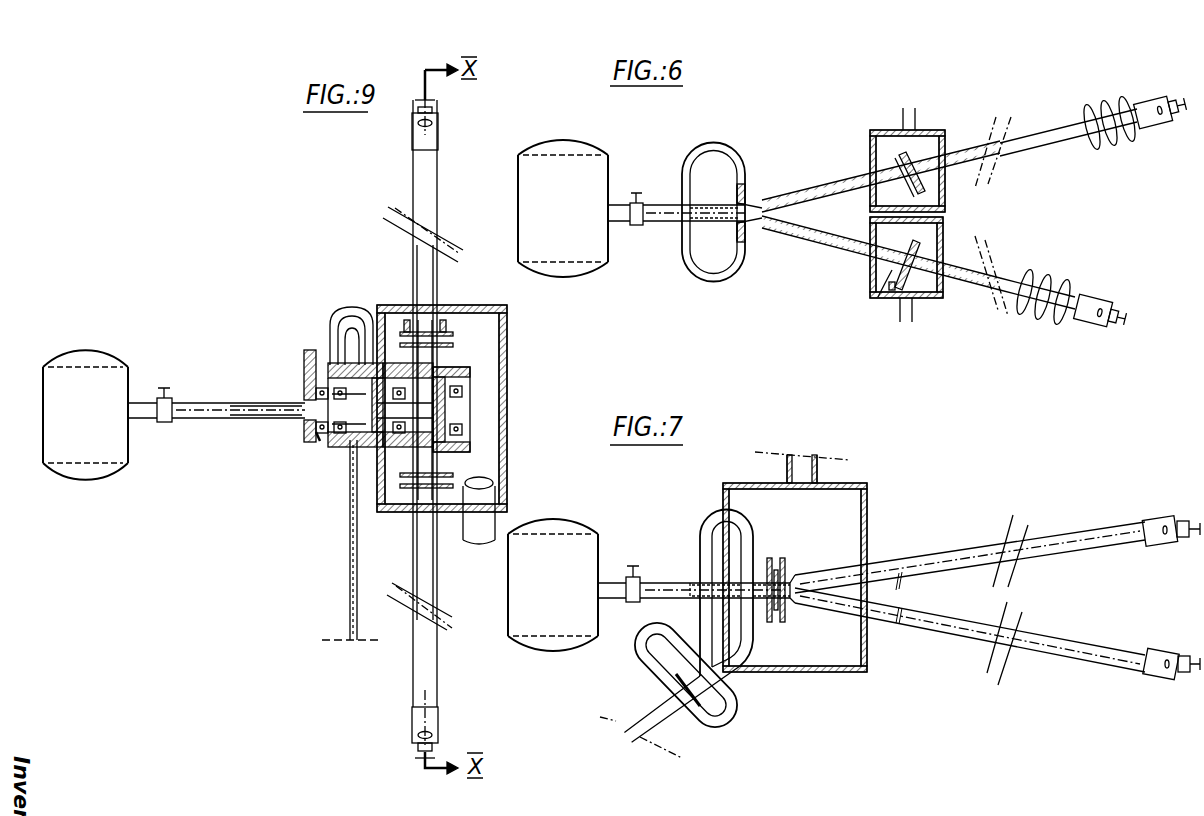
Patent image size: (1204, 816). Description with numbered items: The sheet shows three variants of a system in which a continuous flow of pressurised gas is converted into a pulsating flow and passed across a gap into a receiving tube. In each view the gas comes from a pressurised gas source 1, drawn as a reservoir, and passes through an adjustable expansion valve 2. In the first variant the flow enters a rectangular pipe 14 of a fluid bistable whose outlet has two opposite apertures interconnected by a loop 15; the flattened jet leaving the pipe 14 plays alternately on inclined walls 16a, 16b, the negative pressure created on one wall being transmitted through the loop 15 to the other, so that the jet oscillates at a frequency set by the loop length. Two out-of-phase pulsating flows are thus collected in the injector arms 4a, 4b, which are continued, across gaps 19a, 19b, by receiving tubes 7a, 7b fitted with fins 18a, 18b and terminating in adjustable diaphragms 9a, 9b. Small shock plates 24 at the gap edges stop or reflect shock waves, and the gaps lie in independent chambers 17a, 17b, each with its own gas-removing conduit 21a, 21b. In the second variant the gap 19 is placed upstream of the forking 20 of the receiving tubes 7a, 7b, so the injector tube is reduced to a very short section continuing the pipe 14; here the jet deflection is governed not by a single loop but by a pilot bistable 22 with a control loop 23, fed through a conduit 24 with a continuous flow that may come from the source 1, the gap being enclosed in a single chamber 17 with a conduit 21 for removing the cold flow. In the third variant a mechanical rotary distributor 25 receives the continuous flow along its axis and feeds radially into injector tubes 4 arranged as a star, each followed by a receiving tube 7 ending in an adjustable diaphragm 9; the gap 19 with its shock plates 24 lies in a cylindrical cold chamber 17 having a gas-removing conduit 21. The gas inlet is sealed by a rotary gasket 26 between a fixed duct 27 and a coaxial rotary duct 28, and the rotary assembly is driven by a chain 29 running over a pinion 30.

In FIG. 9, the pressurised gas source 1 is at (82, 378).
In FIG. 6, the pressurised gas source 1 is at (560, 166).
In FIG. 7, the pressurised gas source 1 is at (562, 542).
In FIG. 9, the adjustable expansion valve 2 is at (163, 424).
In FIG. 6, the adjustable expansion valve 2 is at (636, 228).
In FIG. 7, the adjustable expansion valve 2 is at (632, 604).
In FIG. 9, the injector tube 4 is at (452, 352).
In FIG. 7, the injector tube 4 is at (760, 604).
In FIG. 6, the injector tube arm 4a is at (824, 202).
In FIG. 6, the injector tube arm 4b is at (838, 242).
In FIG. 9, the receiving tube 7 is at (440, 278).
In FIG. 6, the receiving tube 7a is at (1040, 140).
In FIG. 7, the receiving tube 7a is at (946, 556).
In FIG. 6, the receiving tube 7b is at (988, 284).
In FIG. 7, the receiving tube 7b is at (955, 640).
In FIG. 9, the adjustable diaphragm 9 is at (440, 122).
In FIG. 6, the adjustable diaphragm 9a is at (1165, 128).
In FIG. 7, the adjustable diaphragm 9a is at (1166, 517).
In FIG. 6, the adjustable diaphragm 9b is at (1099, 325).
In FIG. 7, the adjustable diaphragm 9b is at (1158, 682).
In FIG. 6, the rectangular pipe 14 is at (726, 222).
In FIG. 7, the rectangular pipe 14 is at (735, 590).
In FIG. 6, the loop 15 is at (708, 152).
In FIG. 6, the inclined wall 16a is at (751, 204).
In FIG. 6, the inclined wall 16b is at (749, 228).
In FIG. 9, the chamber 17 is at (497, 402).
In FIG. 7, the chamber 17 is at (866, 652).
In FIG. 6, the independent chamber 17a is at (872, 158).
In FIG. 6, the independent chamber 17b is at (868, 282).
In FIG. 6, the fins 18a is at (1116, 150).
In FIG. 6, the fins 18b is at (1052, 284).
In FIG. 9, the gap 19 is at (454, 338).
In FIG. 7, the gap 19 is at (786, 576).
In FIG. 6, the gap 19a is at (924, 187).
In FIG. 6, the gap 19b is at (918, 246).
In FIG. 7, the forking 20 is at (793, 598).
In FIG. 9, the gas-removing conduit 21 is at (490, 526).
In FIG. 7, the gas-removing conduit 21 is at (800, 472).
In FIG. 6, the gas-removing conduit 21a is at (935, 112).
In FIG. 6, the gas-removing conduit 21b is at (914, 318).
In FIG. 7, the pilot bistable 22 is at (668, 678).
In FIG. 7, the control loop 23 is at (731, 706).
In FIG. 9, the shock plates 24 is at (410, 332).
In FIG. 6, the shock plates 24 is at (898, 290).
In FIG. 7, the shock plates 24 is at (783, 558).
In FIG. 9, the rotary distributor 25 is at (448, 378).
In FIG. 9, the rotary gasket 26 is at (318, 436).
In FIG. 9, the fixed duct 27 is at (262, 402).
In FIG. 9, the rotary duct 28 is at (310, 392).
In FIG. 9, the chain 29 is at (350, 562).
In FIG. 9, the pinion 30 is at (342, 340).